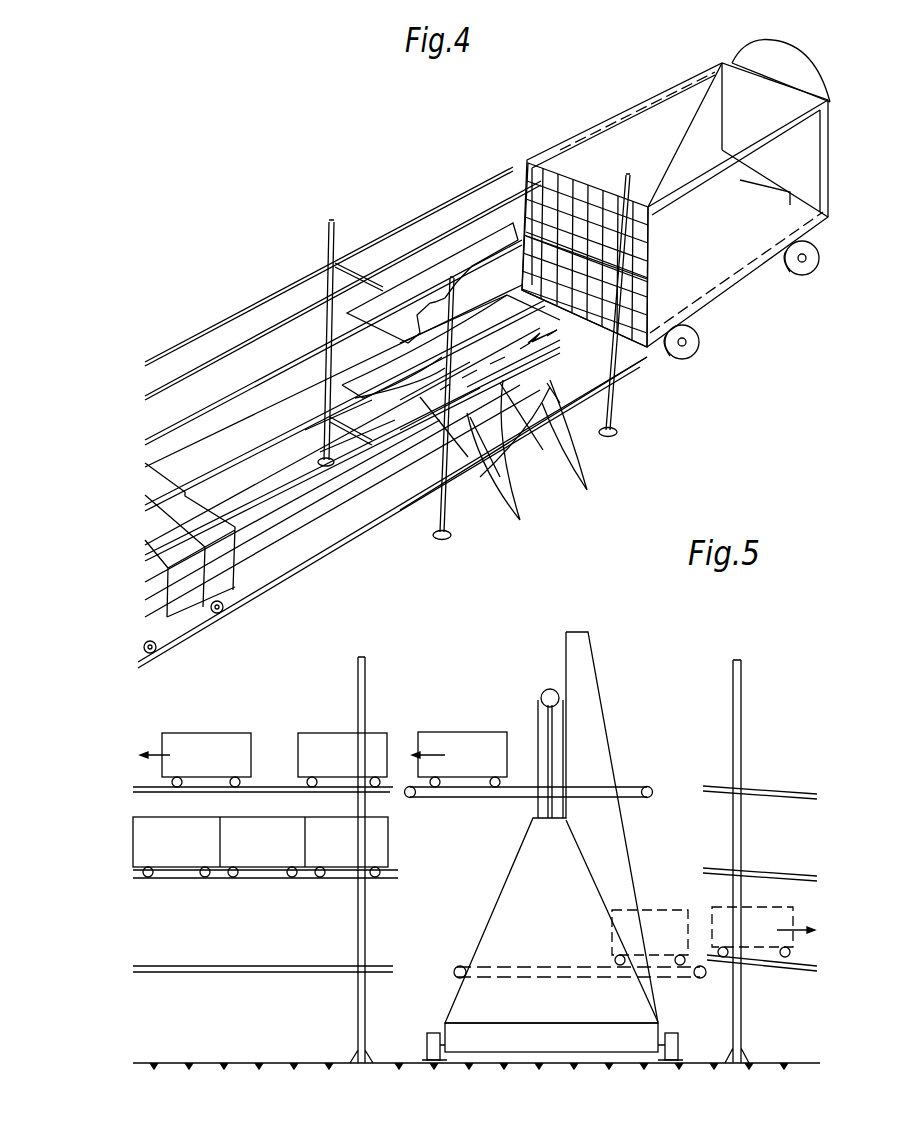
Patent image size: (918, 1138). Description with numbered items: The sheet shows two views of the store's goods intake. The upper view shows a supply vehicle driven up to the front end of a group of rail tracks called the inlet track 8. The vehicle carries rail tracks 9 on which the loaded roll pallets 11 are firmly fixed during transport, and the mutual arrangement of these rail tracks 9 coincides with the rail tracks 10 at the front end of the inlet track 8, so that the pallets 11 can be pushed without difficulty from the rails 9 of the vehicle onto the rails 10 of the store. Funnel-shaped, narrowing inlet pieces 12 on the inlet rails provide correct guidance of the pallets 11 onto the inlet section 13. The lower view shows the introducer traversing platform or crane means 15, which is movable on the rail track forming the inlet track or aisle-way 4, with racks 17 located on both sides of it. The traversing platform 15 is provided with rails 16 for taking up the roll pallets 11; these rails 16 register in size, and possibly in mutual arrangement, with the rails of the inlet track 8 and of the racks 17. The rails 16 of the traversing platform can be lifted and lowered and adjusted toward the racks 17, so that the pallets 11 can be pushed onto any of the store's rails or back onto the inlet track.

In FIG. 5, the inlet track or aisle-way 4 is at (435, 1063).
In FIG. 4, the inlet track 8 is at (363, 533).
In FIG. 4, the rail tracks in the vehicle 9 is at (730, 273).
In FIG. 4, the rail tracks at the front end of inlet track 10 is at (508, 461).
In FIG. 4, the pallets 11 is at (547, 183).
In FIG. 5, the pallets 11 is at (470, 742).
In FIG. 4, the funnel-shaped narrowing inlet pieces 12 is at (523, 402).
In FIG. 4, the inlet section 13 is at (467, 263).
In FIG. 5, the introducer traversing platform or crane means 15 is at (575, 842).
In FIG. 5, the rails of the traversing platform 16 is at (515, 795).
In FIG. 5, the racks 17 is at (367, 790).